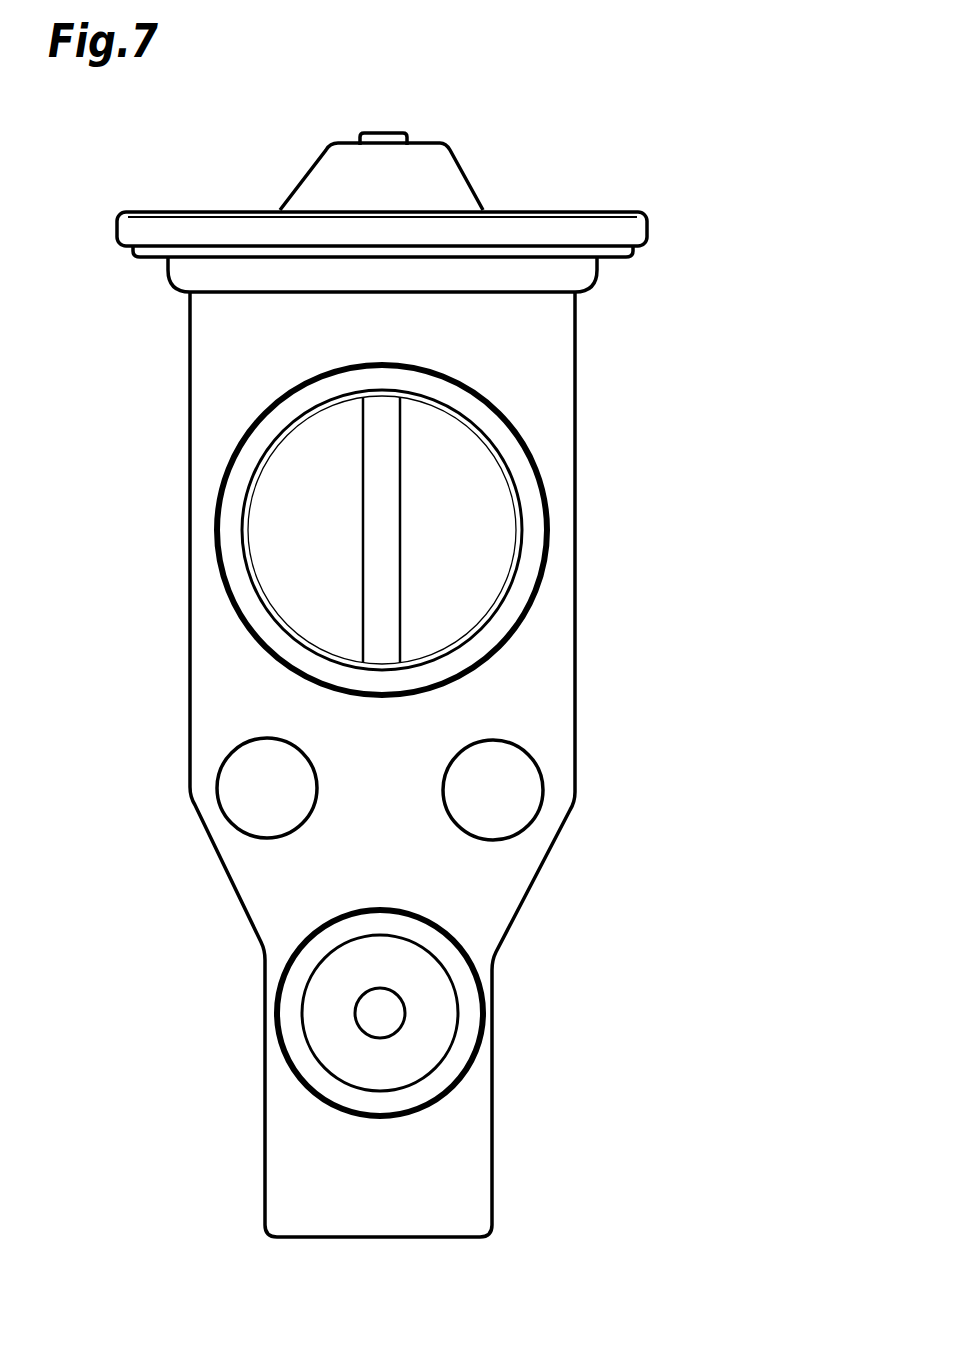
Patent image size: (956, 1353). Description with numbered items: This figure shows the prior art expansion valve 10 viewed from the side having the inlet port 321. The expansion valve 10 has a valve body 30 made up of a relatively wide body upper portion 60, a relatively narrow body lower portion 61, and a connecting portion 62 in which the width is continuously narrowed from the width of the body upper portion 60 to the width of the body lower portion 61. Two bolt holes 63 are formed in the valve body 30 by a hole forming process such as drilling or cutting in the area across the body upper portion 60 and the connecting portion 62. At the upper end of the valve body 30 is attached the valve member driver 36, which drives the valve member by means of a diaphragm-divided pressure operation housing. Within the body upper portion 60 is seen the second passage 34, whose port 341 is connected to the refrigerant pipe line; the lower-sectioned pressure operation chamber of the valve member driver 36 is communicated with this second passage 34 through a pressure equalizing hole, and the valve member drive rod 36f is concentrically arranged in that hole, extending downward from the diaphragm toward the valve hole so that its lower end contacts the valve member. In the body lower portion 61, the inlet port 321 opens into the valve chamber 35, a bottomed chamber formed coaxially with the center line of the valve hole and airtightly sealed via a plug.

The expansion valve 10 is at (651, 108).
The valve body 30 is at (580, 349).
The second passage 34 is at (468, 549).
The port 341 is at (252, 597).
The valve chamber 35 is at (328, 1005).
The valve member driver 36 is at (468, 178).
The valve member drive rod 36f is at (378, 477).
The body upper portion 60 is at (553, 444).
The body lower portion 61 is at (482, 1155).
The connecting portion 62 is at (508, 892).
The bolt holes 63 is at (250, 783).
The inlet port 321 is at (447, 1073).